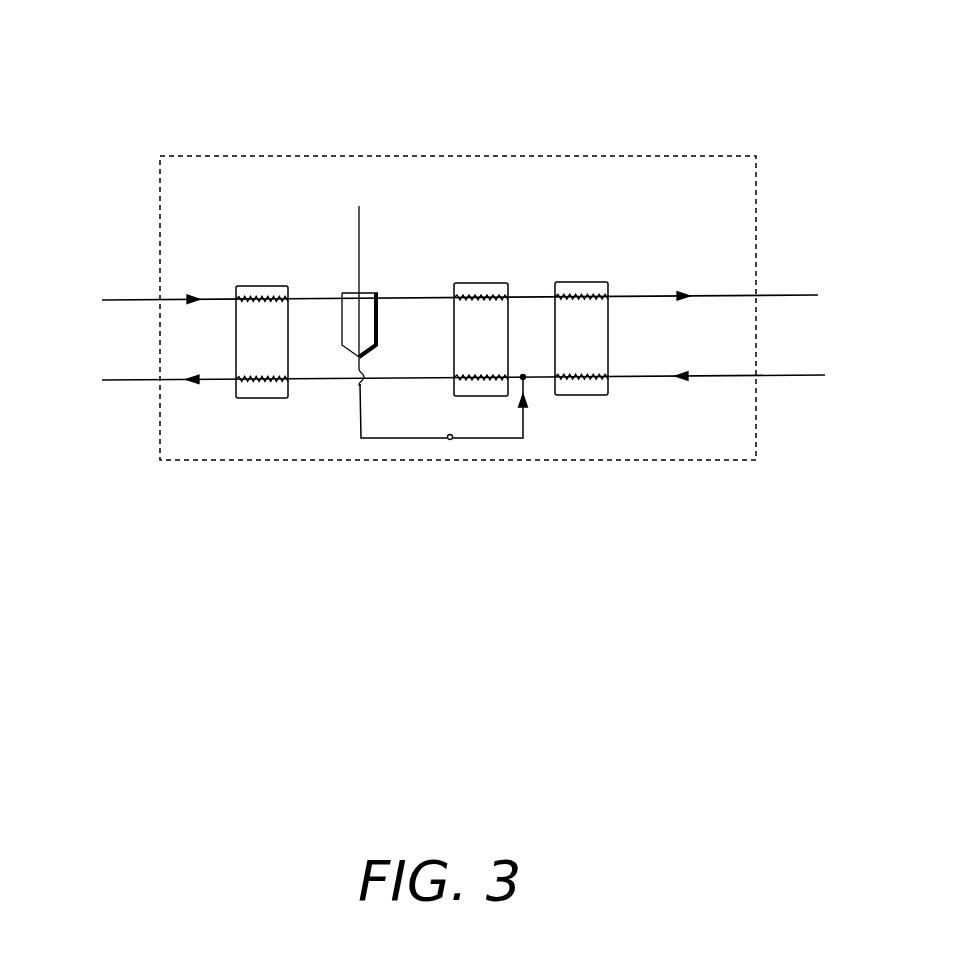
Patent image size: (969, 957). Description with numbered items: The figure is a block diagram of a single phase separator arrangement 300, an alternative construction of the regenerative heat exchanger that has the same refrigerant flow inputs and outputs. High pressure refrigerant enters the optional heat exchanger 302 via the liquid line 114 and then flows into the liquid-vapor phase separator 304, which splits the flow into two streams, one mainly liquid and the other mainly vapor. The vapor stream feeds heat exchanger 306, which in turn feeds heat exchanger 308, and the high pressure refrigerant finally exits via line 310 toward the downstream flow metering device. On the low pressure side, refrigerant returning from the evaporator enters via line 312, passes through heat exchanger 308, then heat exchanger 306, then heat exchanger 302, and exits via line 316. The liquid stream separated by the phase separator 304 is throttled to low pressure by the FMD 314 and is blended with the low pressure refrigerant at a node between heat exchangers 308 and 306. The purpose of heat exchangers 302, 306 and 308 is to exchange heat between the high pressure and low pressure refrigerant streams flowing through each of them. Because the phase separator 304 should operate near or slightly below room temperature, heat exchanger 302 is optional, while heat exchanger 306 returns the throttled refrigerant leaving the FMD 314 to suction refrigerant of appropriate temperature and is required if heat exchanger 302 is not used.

The single phase separator arrangement 300 is at (246, 142).
The liquid line 114 is at (138, 300).
The line 316 is at (138, 380).
The heat exchanger 302 is at (260, 290).
The liquid-vapor phase separator 304 is at (372, 292).
The heat exchanger 306 is at (478, 288).
The heat exchanger 308 is at (590, 285).
The line 310 is at (772, 294).
The line 312 is at (773, 375).
The FMD 314 is at (447, 436).